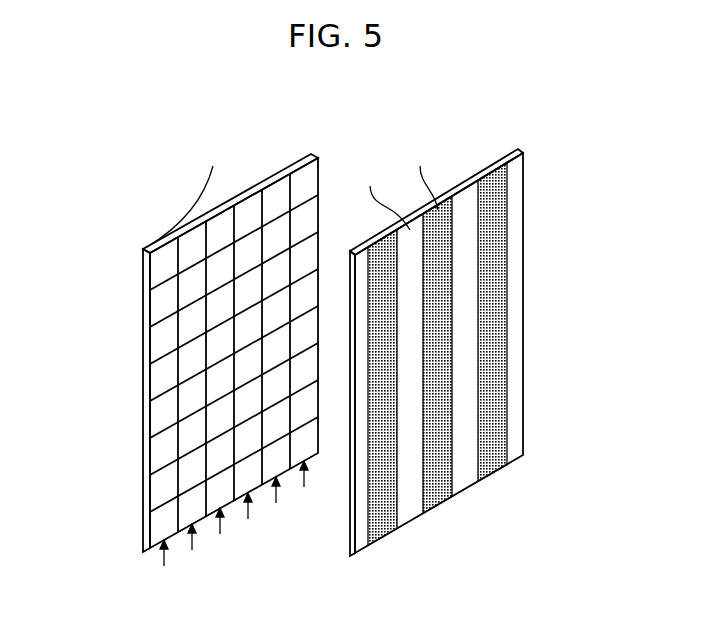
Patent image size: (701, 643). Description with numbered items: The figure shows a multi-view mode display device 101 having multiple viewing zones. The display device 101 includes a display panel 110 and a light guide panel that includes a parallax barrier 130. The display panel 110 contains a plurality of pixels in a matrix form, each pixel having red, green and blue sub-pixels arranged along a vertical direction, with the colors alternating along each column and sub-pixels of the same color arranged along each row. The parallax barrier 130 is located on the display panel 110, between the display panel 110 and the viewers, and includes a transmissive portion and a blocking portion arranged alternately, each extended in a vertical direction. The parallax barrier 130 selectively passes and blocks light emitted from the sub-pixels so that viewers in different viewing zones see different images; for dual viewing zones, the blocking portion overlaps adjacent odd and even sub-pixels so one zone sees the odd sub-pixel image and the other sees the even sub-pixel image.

The display panel 110 is at (143, 490).
The display device 101 is at (497, 306).
The parallax barrier 130 is at (525, 262).